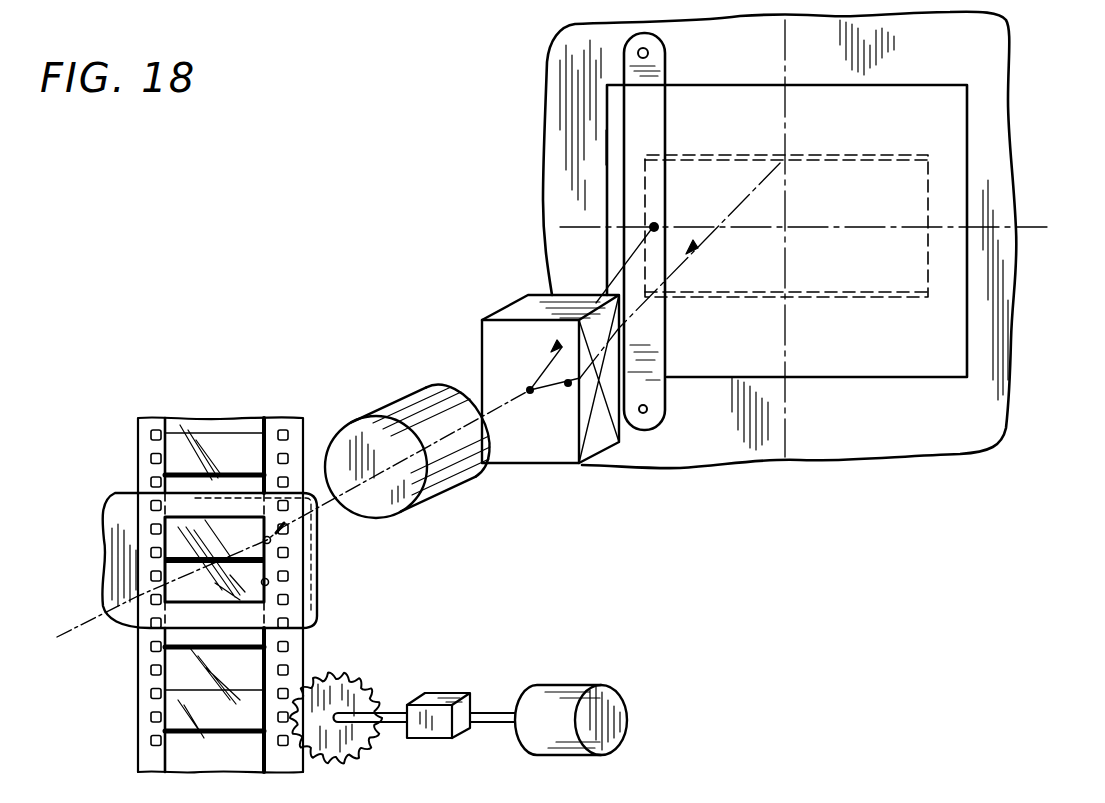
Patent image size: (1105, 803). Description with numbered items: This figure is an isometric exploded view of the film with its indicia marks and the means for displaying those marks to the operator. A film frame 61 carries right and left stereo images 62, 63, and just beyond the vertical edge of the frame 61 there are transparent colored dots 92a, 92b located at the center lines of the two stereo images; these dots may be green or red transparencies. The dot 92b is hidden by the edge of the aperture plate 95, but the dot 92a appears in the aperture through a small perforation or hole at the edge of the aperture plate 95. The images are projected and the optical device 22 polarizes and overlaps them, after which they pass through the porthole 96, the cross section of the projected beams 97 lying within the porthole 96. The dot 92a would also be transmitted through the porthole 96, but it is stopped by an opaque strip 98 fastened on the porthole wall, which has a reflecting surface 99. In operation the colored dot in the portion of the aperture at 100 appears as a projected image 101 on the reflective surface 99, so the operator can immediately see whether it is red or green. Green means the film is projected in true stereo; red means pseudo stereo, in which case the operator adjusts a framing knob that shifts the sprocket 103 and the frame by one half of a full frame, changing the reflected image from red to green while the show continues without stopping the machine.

The optical device 22 is at (556, 463).
The film frame 61 is at (167, 571).
The right stereo image 62 is at (234, 545).
The left stereo image 63 is at (255, 593).
The transparent colored dot 92a is at (270, 541).
The transparent colored dot 92b is at (268, 583).
The aperture plate 95 is at (314, 623).
The porthole 96 is at (965, 372).
The projected beams 97 is at (985, 284).
The opaque strip 98 is at (630, 107).
The reflecting surface 99 is at (623, 148).
The portion of the aperture 100 is at (285, 526).
The projected image 101 is at (652, 225).
The sprocket 103 is at (362, 763).